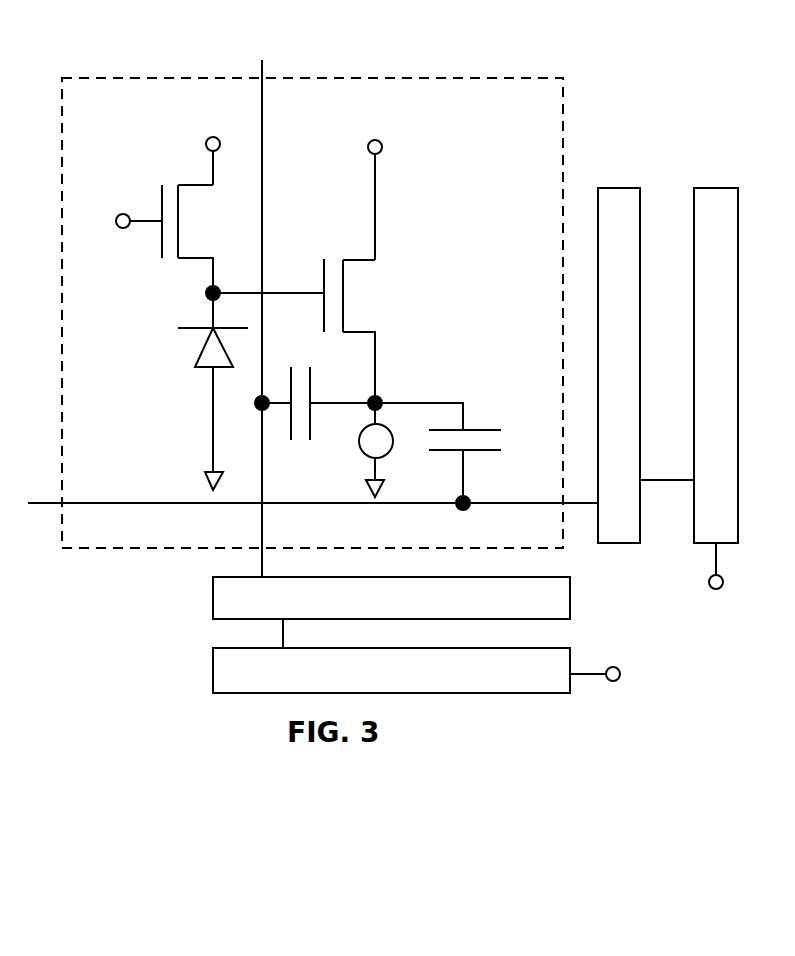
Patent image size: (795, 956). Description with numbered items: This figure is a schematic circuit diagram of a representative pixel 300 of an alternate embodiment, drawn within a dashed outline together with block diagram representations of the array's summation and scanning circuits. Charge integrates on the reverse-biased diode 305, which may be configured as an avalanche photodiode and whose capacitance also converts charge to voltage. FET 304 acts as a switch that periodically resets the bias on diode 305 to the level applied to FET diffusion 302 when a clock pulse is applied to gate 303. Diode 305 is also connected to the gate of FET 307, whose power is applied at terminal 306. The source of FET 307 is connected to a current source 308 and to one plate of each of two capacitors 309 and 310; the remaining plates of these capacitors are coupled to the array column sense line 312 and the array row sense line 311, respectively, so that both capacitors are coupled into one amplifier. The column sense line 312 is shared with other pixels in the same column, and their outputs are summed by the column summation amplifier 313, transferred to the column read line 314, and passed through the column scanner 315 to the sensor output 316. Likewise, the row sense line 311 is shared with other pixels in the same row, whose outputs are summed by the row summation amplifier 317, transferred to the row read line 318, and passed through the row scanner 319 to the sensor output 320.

The pixel 300 is at (126, 72).
The FET diffusion 302 is at (213, 137).
The gate 303 is at (117, 216).
The FET 304 is at (182, 229).
The reverse-biased diode 305 is at (188, 339).
The power connection for FET 307 306 is at (375, 140).
The FET 307 is at (357, 296).
The current source 308 is at (357, 443).
The capacitor 309 is at (474, 421).
The capacitor 310 is at (320, 391).
The array row sense line 311 is at (483, 505).
The array column sense line 312 is at (263, 243).
The column summation amplifier 313 is at (213, 608).
The column read line 314 is at (287, 637).
The column scanner 315 is at (213, 673).
The sensor output 316 is at (620, 671).
The row summation amplifier 317 is at (622, 186).
The row read line 318 is at (665, 482).
The row scanner 319 is at (717, 186).
The sensor output 320 is at (716, 589).